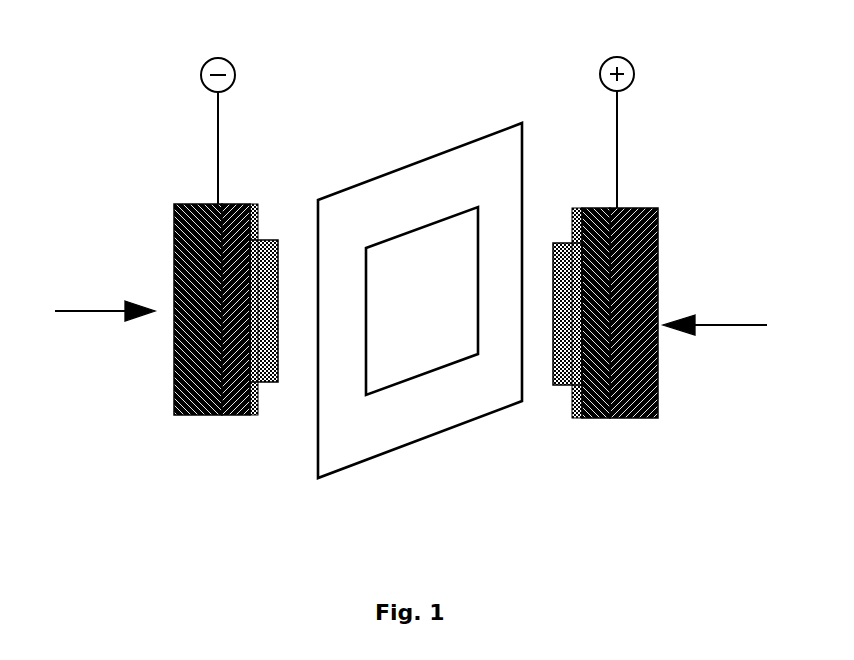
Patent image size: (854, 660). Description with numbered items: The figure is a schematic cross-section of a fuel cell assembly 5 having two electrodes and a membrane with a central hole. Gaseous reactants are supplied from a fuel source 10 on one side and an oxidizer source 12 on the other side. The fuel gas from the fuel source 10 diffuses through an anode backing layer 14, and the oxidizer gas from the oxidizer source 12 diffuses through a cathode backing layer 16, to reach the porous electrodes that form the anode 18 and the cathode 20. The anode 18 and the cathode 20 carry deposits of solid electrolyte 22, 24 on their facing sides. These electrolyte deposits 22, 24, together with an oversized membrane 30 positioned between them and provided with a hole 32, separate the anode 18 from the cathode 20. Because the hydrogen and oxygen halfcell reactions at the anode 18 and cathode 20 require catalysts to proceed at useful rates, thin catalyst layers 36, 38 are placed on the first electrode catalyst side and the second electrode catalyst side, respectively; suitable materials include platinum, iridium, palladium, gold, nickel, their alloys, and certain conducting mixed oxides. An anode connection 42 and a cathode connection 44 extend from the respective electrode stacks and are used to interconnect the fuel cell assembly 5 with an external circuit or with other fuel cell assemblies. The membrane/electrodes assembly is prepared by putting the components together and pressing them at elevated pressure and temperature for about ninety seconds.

The fuel cell assembly 5 is at (80, 105).
The fuel source 10 is at (107, 308).
The oxidizer source 12 is at (715, 316).
The anode backing layer 14 is at (175, 367).
The cathode backing layer 16 is at (655, 373).
The anode 18 is at (237, 414).
The cathode 20 is at (593, 420).
The solid electrolyte deposit 22 is at (267, 242).
The solid electrolyte deposit 24 is at (570, 243).
The oversized membrane 30 is at (348, 440).
The hole 32 is at (412, 360).
The catalyst layer 36 is at (258, 383).
The catalyst layer 38 is at (573, 386).
The anode connection 42 is at (218, 125).
The cathode connection 44 is at (617, 130).